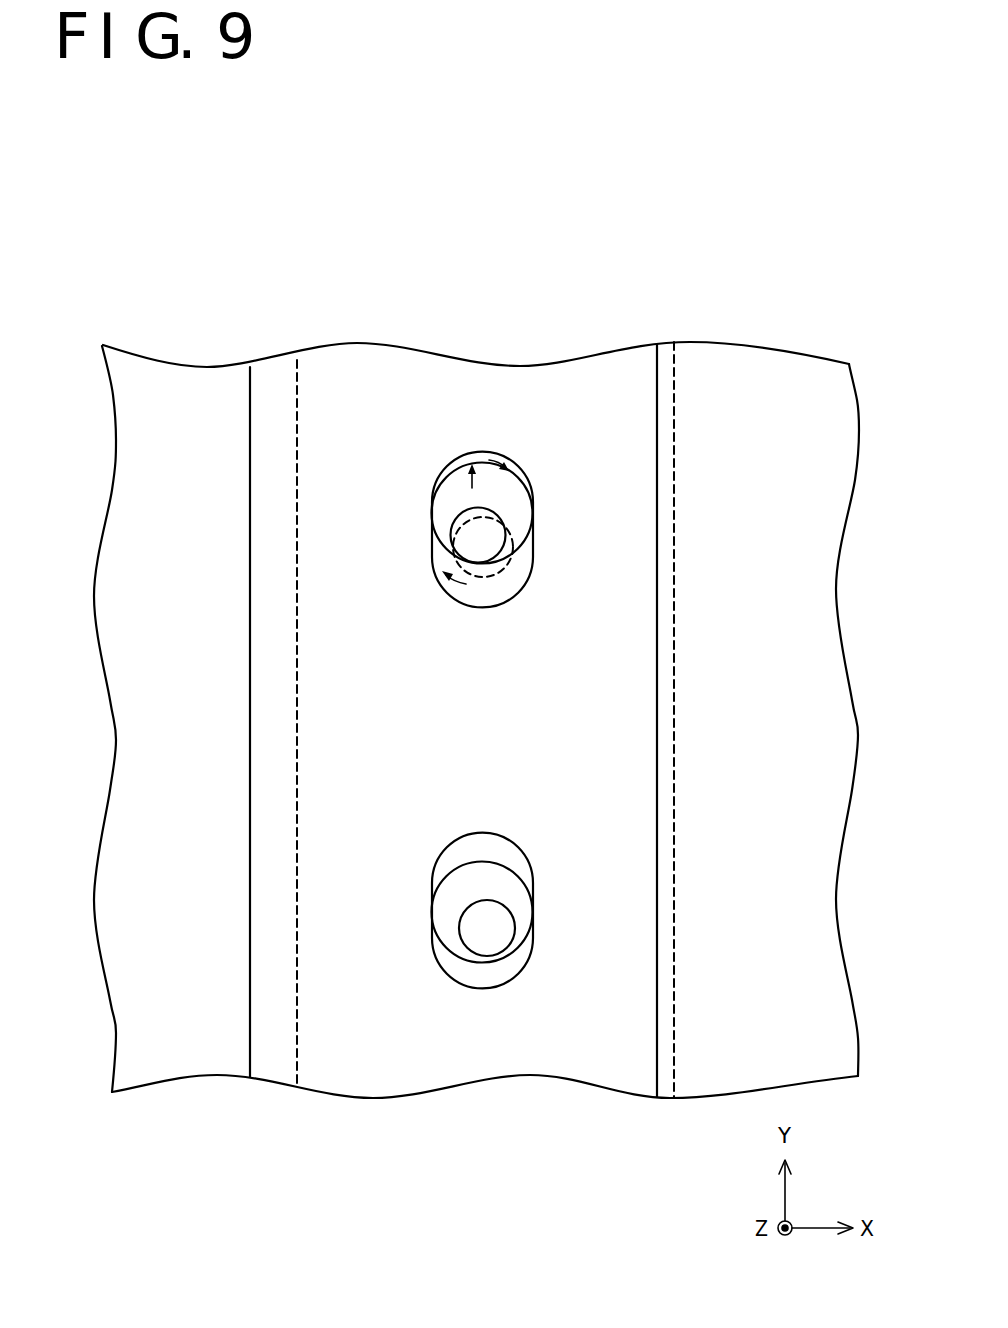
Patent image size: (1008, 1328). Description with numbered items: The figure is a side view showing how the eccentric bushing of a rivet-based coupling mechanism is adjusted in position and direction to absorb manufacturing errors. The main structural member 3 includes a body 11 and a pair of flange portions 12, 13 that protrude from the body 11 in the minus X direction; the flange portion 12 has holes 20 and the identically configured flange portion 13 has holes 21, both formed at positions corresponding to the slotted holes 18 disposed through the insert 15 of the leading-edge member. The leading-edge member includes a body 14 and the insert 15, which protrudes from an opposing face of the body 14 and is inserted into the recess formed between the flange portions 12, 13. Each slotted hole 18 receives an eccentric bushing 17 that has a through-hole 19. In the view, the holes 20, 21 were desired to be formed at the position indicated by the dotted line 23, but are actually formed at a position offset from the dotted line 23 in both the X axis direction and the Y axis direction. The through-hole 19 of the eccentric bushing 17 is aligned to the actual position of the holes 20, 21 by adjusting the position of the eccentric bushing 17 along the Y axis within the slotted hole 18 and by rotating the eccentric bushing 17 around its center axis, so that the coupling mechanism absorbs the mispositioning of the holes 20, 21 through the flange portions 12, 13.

The main structural member 3 is at (674, 239).
The body 11 is at (737, 368).
The flange portion 12 is at (485, 691).
The flange portion 13 is at (485, 691).
The body 14 is at (174, 384).
The insert 15 is at (459, 365).
The eccentric bushing 17 is at (443, 543).
The slotted hole 18 is at (457, 466).
The through-hole 19 is at (544, 712).
The hole 20 is at (544, 712).
The hole 21 is at (506, 524).
The dotted line 23 is at (525, 557).